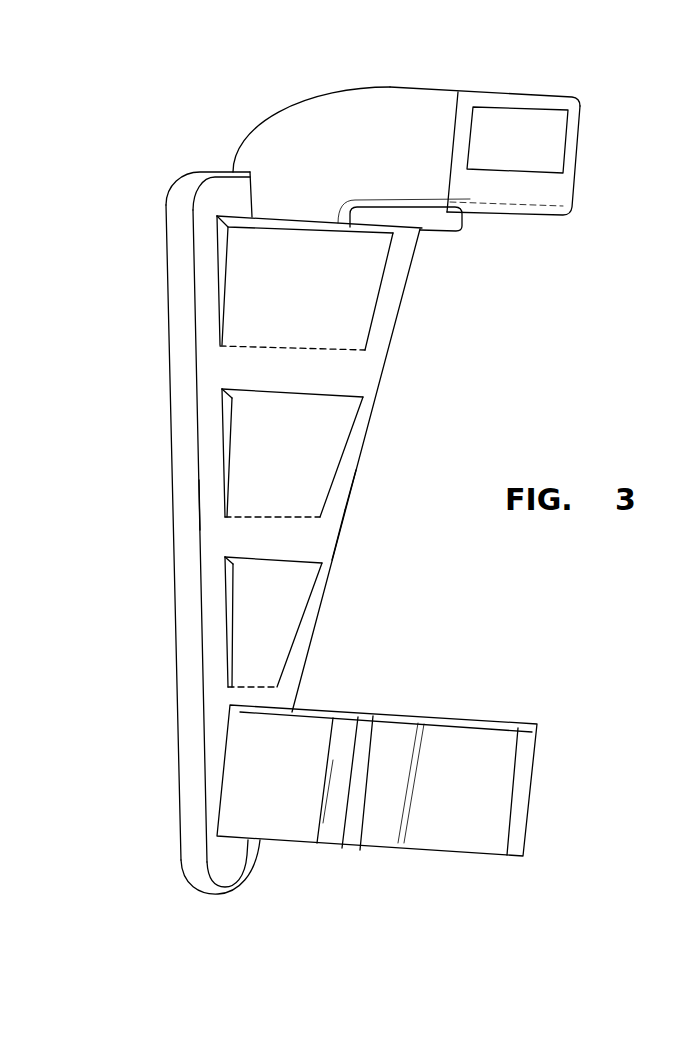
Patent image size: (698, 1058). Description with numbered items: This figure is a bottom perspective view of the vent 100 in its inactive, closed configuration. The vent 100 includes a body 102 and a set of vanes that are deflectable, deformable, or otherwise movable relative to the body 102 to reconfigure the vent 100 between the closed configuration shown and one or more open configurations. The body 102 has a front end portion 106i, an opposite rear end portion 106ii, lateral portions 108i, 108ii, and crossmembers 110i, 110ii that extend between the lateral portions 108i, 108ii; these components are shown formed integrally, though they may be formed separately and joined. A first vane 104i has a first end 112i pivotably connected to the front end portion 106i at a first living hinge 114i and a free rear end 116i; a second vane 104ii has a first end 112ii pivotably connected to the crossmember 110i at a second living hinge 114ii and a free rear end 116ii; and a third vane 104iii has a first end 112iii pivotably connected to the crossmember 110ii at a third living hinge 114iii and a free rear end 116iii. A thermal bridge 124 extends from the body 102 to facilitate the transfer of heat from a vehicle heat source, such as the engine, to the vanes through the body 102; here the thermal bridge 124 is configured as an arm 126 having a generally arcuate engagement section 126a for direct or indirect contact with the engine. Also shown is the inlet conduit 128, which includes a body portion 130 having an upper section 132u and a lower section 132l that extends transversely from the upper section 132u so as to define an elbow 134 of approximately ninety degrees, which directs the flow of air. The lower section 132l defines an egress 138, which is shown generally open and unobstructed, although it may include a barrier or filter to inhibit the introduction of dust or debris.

The vent 100 is at (187, 162).
The body 102 is at (163, 445).
The first vane 104i is at (274, 609).
The second vane 104ii is at (320, 432).
The third vane 104iii is at (358, 280).
The front end portion 106i is at (235, 863).
The rear end portion 106ii is at (226, 194).
The lateral portion 108i is at (335, 507).
The lateral portion 108ii is at (210, 508).
The crossmember 110i is at (288, 540).
The crossmember 110ii is at (318, 373).
The first end of first vane 112i is at (260, 677).
The first end of second vane 112ii is at (302, 508).
The first end of third vane 112iii is at (348, 345).
The first living hinge 114i is at (253, 688).
The second living hinge 114ii is at (250, 517).
The third living hinge 114iii is at (267, 348).
The free rear end of first vane 116i is at (300, 563).
The free rear end of second vane 116ii is at (243, 383).
The free rear end of third vane 116iii is at (297, 222).
The thermal bridge 124 is at (512, 712).
The arm 126 is at (452, 755).
The engagement section 126a is at (477, 806).
The inlet conduit 128 is at (386, 66).
The body portion 130 is at (402, 80).
The upper section 132u is at (275, 205).
The lower section 132l is at (430, 128).
The elbow 134 is at (332, 186).
The egress 138 is at (548, 147).